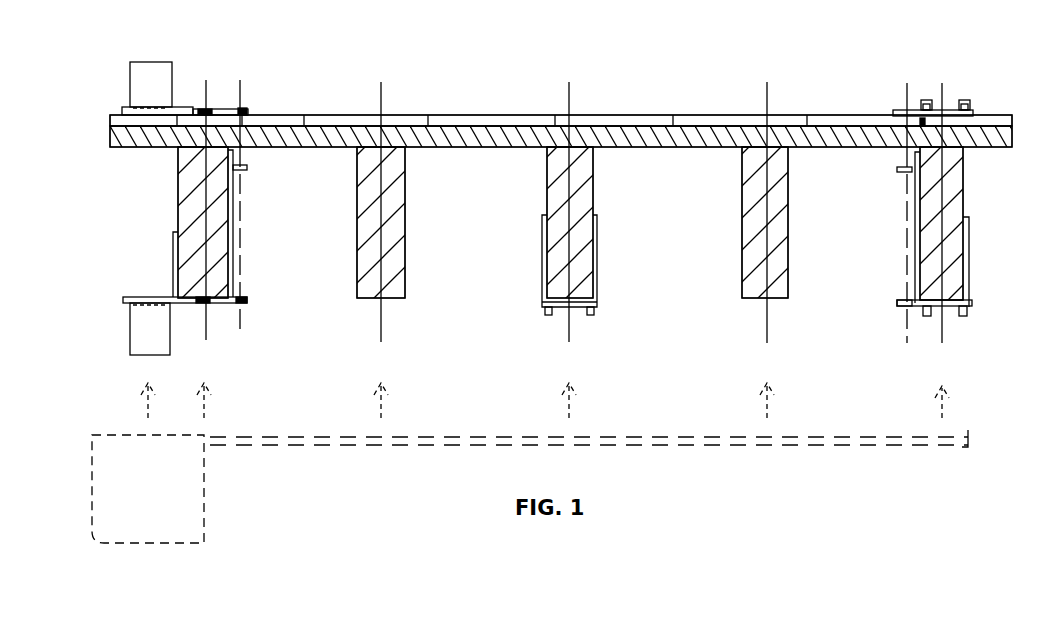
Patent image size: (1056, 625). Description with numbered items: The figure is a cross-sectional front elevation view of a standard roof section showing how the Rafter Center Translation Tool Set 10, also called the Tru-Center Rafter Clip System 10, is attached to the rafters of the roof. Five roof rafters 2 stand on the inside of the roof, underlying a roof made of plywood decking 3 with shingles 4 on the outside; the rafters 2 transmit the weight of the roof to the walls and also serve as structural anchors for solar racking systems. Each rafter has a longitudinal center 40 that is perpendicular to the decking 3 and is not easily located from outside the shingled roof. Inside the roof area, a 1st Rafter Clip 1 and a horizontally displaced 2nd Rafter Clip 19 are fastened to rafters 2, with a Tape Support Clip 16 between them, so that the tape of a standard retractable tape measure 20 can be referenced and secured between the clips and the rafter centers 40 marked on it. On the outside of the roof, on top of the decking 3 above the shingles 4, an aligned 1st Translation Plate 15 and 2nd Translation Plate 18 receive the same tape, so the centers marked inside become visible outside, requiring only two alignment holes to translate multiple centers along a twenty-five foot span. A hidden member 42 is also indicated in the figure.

The 1st Rafter Clip 1 is at (162, 297).
The roof rafters 2 is at (178, 212).
The decking 3 is at (980, 150).
The shingles 4 is at (613, 117).
The Rafter Center Translation Tool Set 10 is at (518, 91).
The 1st Translation Plate 15 is at (150, 62).
The Tape Support Clip 16 is at (543, 278).
The 2nd Translation Plate 18 is at (897, 113).
The 2nd Rafter Clip 19 is at (973, 263).
The retractable tape measure 20 is at (200, 537).
The rafter longitudinal centers 40 is at (203, 323).
The hidden rod 42 is at (240, 85).